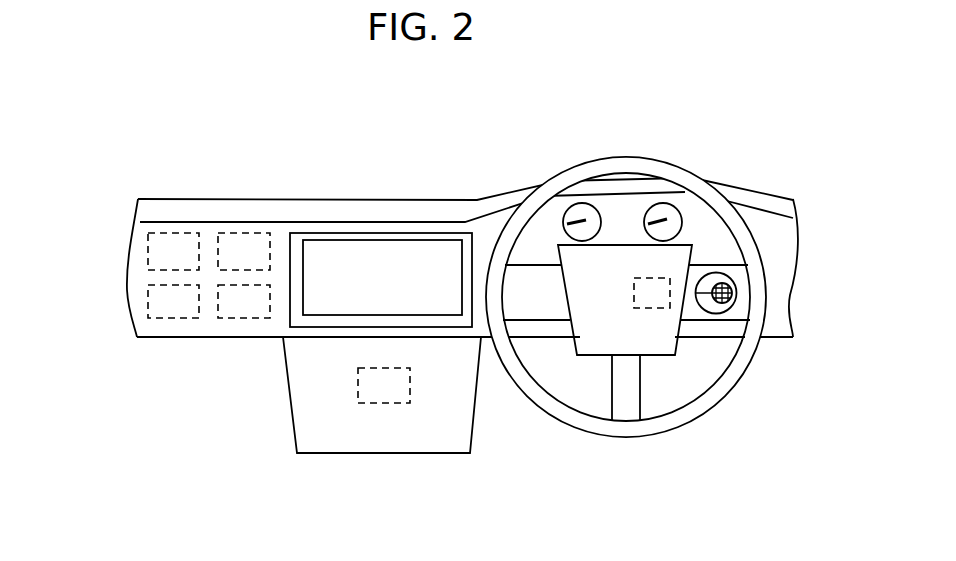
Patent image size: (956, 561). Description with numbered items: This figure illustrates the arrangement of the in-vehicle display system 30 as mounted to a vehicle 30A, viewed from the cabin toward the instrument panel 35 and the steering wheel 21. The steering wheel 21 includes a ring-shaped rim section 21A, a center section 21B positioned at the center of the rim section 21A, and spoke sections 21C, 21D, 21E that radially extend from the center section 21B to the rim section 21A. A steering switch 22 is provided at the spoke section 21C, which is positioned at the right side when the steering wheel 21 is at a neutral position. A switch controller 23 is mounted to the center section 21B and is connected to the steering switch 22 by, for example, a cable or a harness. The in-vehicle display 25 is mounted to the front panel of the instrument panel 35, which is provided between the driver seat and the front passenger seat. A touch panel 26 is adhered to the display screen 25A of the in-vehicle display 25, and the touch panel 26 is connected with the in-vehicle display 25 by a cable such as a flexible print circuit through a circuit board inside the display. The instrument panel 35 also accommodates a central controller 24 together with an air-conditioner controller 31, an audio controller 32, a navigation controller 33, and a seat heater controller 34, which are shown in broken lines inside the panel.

The steering wheel 21 is at (658, 322).
The rim section 21A is at (683, 183).
The center section 21B is at (597, 340).
The spoke section 21C is at (690, 307).
The spoke section 21D is at (627, 398).
The spoke section 21E is at (543, 303).
The steering switch 22 is at (730, 302).
The switch controller 23 is at (657, 305).
The central controller 24 is at (378, 393).
The in-vehicle display 25 is at (355, 233).
The display screen 25A is at (388, 258).
The touch panel 26 is at (338, 260).
The in-vehicle display system 30 is at (460, 155).
The vehicle 30A is at (760, 197).
The air-conditioner controller 31 is at (245, 248).
The audio controller 32 is at (168, 248).
The navigation controller 33 is at (246, 312).
The seat heater controller 34 is at (175, 312).
The instrument panel 35 is at (482, 210).